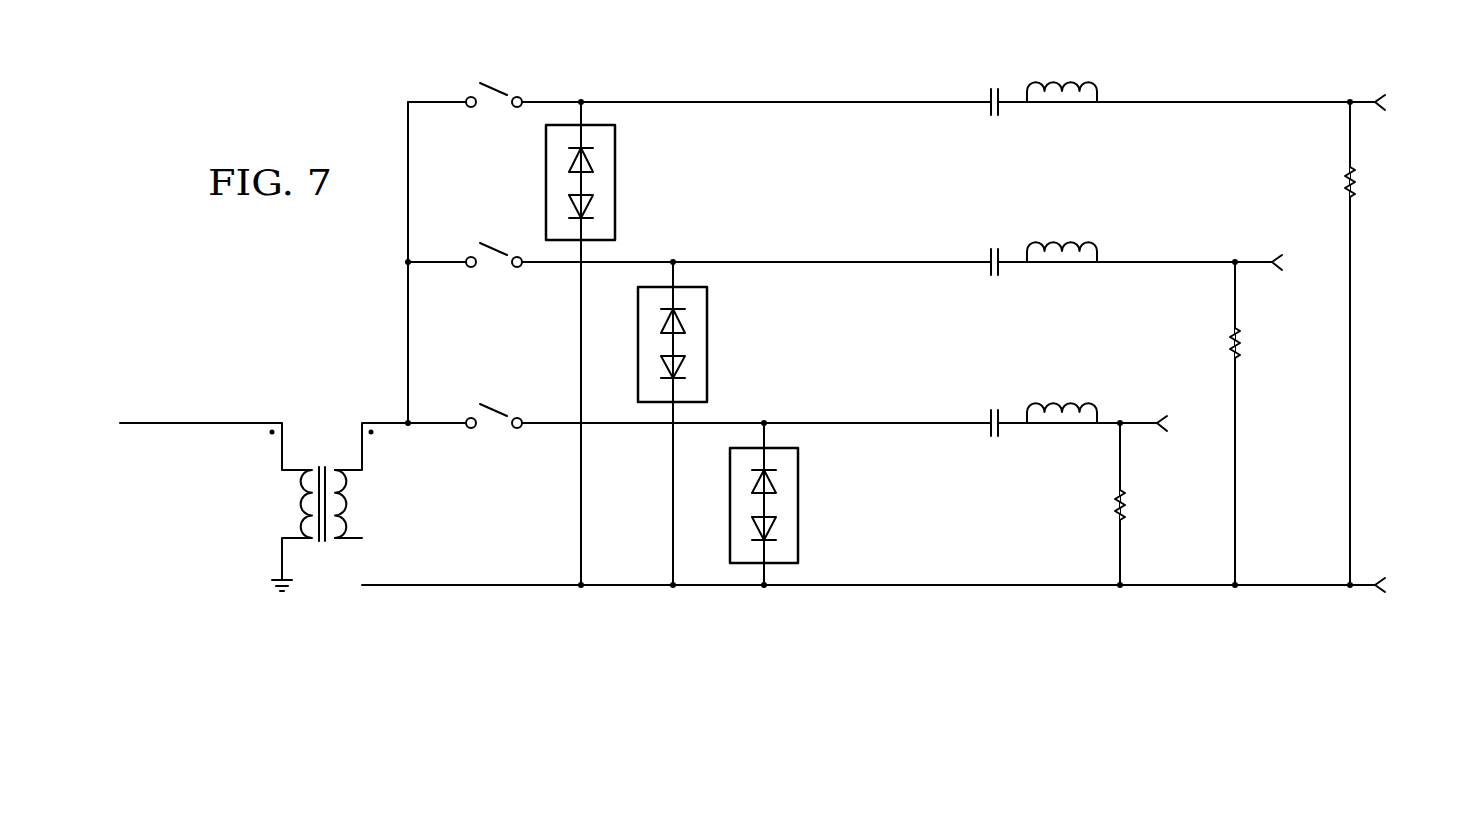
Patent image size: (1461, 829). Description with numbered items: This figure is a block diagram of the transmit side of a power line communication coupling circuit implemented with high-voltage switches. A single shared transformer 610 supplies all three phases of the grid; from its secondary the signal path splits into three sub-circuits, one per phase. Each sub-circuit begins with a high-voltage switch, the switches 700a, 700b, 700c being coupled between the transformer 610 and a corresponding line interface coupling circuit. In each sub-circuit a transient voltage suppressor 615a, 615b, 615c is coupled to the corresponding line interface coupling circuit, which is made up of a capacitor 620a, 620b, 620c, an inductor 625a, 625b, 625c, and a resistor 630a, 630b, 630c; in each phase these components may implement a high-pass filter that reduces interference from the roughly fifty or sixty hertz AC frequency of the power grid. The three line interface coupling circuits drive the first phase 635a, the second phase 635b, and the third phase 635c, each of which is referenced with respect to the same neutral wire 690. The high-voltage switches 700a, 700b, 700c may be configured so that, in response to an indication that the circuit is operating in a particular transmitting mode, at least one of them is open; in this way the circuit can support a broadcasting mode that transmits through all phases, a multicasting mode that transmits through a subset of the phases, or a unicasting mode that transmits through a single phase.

The first transformer 610 is at (322, 465).
The high-voltage switch 700a is at (515, 68).
The high-voltage switch 700b is at (500, 247).
The high-voltage switch 700c is at (497, 410).
The transient voltage suppressor 615a is at (615, 183).
The transient voltage suppressor 615b is at (707, 342).
The transient voltage suppressor 615c is at (798, 503).
The capacitor 620a is at (992, 87).
The capacitor 620b is at (992, 247).
The capacitor 620c is at (992, 408).
The inductor 625a is at (1072, 83).
The inductor 625b is at (1072, 243).
The inductor 625c is at (1072, 404).
The resistor 630a is at (1357, 180).
The resistor 630b is at (1240, 343).
The resistor 630c is at (1125, 505).
The first phase 635a is at (1375, 98).
The second phase 635b is at (1272, 258).
The third phase 635c is at (1157, 420).
The neutral wire 690 is at (1375, 590).